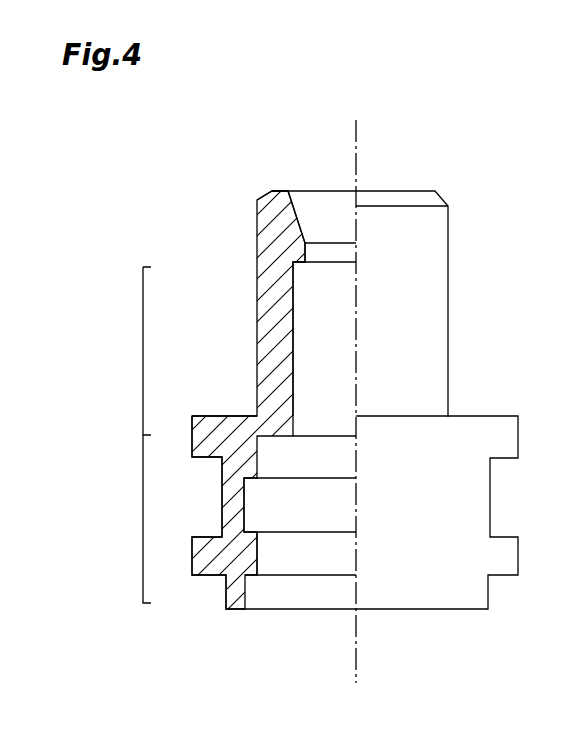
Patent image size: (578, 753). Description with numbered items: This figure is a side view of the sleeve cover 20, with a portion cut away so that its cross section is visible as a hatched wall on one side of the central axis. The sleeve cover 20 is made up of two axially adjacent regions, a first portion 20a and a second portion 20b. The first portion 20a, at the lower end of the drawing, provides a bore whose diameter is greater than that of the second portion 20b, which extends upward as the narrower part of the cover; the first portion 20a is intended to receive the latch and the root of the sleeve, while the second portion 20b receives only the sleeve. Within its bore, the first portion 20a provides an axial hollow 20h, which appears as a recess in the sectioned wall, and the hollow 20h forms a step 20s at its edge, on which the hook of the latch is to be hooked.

The sleeve cover 20 is at (357, 130).
The first portion 20a is at (183, 512).
The second portion 20b is at (203, 313).
The axial hollow 20h is at (252, 506).
The step 20s is at (243, 529).